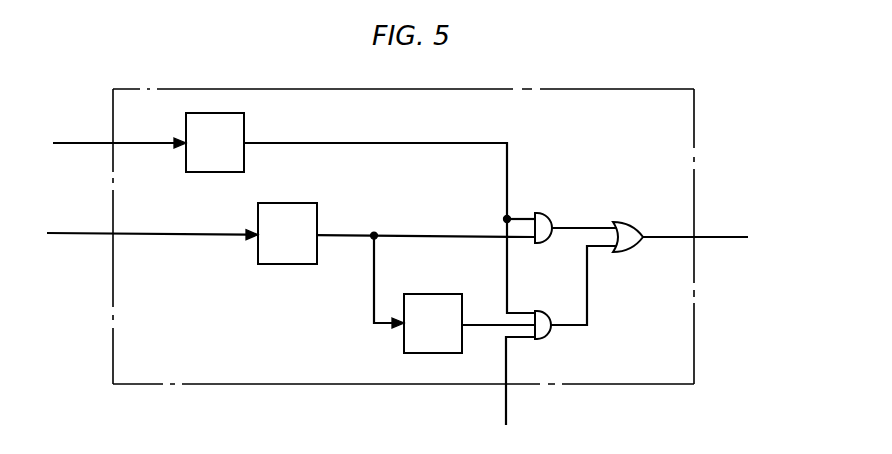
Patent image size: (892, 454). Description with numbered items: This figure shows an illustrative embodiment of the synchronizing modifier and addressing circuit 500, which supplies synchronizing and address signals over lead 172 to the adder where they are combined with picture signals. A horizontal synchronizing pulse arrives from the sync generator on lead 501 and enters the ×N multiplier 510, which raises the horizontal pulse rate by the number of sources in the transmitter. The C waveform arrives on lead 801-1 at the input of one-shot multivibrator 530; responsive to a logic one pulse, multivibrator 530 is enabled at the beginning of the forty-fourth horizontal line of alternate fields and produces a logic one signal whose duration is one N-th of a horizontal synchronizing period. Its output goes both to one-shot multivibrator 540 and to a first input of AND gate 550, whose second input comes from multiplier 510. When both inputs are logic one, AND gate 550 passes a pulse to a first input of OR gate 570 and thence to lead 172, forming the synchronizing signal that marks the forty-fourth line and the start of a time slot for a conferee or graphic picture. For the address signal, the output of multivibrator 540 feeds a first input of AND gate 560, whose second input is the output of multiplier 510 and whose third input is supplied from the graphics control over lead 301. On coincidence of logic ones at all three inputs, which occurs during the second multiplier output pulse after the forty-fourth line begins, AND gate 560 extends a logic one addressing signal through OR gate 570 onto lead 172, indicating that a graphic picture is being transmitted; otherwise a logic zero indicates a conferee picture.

The synchronizing modifier and addressing circuit 500 is at (639, 89).
The lead 501 is at (81, 143).
The ×N multiplier 510 is at (220, 113).
The lead 801-1 is at (83, 233).
The one-shot multivibrator 530 is at (290, 203).
The one-shot multivibrator 540 is at (434, 294).
The AND gate 550 is at (558, 200).
The AND gate 560 is at (540, 339).
The OR gate 570 is at (636, 223).
The lead 172 is at (714, 237).
The lead 301 is at (506, 413).